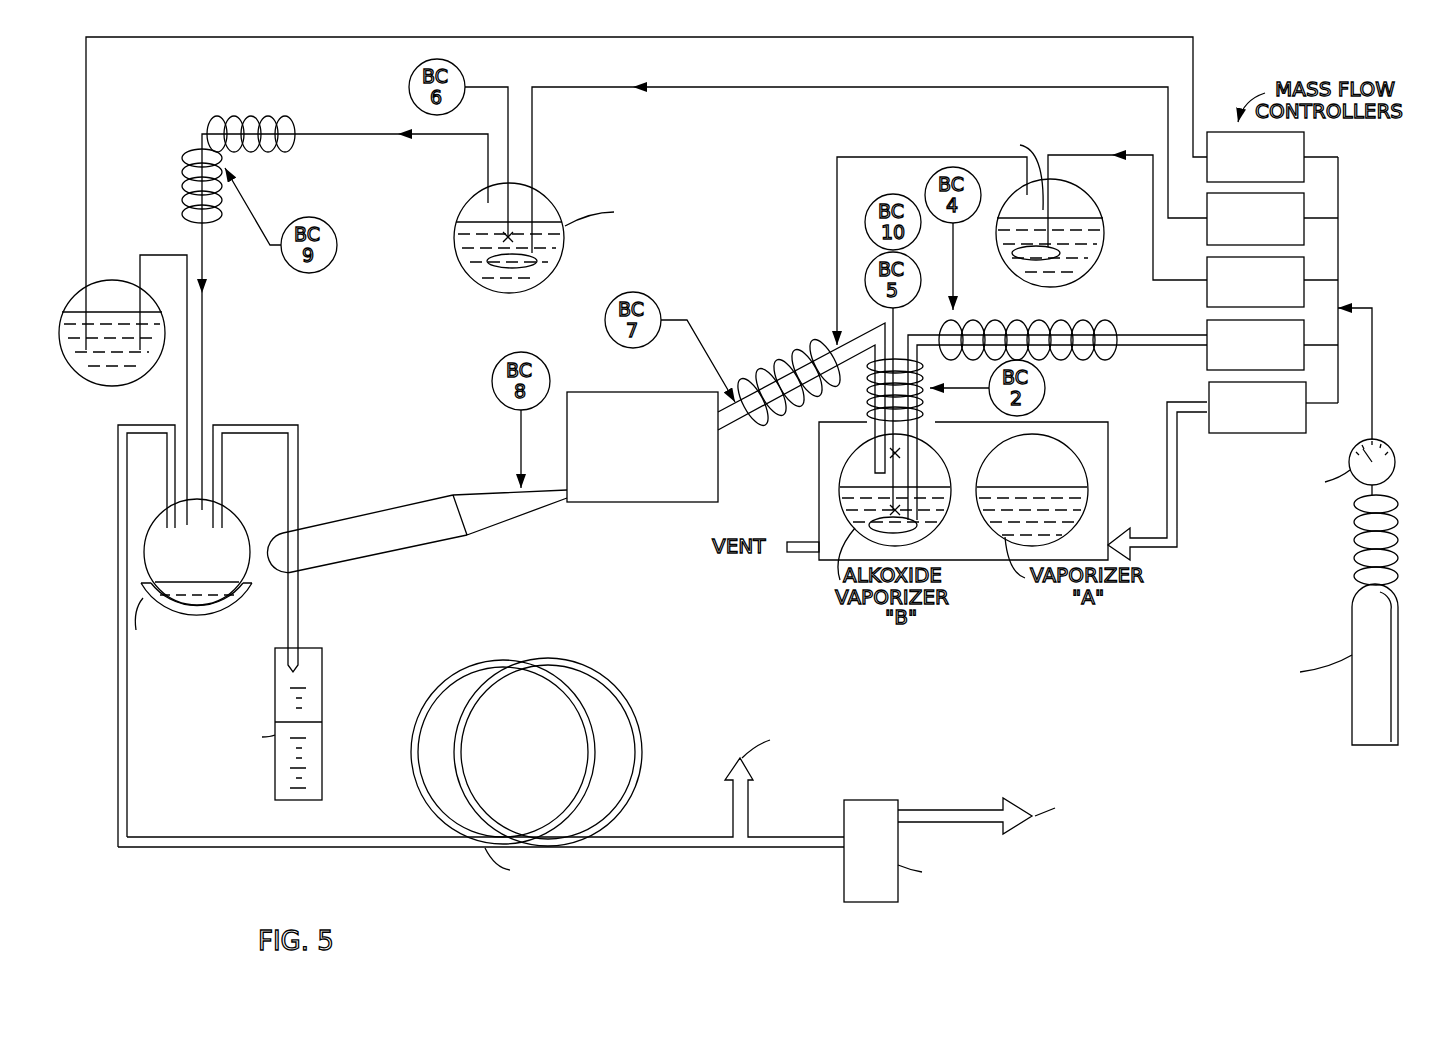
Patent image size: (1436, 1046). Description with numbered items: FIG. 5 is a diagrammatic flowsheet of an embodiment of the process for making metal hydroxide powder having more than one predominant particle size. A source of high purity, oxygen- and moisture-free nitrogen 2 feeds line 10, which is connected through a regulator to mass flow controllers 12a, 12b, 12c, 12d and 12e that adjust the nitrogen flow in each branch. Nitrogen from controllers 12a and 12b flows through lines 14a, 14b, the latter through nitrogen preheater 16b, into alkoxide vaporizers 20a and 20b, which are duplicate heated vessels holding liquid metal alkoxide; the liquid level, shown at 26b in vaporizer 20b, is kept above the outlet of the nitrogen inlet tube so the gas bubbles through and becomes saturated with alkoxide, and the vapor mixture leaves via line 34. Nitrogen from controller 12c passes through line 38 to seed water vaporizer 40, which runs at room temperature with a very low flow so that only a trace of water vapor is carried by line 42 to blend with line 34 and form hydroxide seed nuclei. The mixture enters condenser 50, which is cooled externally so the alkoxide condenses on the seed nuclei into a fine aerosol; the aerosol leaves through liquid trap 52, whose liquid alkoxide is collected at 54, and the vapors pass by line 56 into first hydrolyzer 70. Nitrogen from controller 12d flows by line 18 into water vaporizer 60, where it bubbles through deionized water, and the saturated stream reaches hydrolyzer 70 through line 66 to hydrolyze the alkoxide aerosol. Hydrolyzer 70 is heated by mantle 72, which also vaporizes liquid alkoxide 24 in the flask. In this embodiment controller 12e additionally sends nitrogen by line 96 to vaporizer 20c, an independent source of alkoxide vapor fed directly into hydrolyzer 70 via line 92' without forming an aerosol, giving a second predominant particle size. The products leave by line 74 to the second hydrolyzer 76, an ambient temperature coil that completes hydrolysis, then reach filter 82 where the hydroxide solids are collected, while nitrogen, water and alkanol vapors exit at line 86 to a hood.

The source of high purity non-reactive gas 2 is at (1352, 705).
The line 10 is at (1372, 405).
The mass flow controller 12a is at (1273, 407).
The mass flow controller 12b is at (1272, 345).
The mass flow controller 12c is at (1272, 282).
The mass flow controller 12d is at (1272, 219).
The nitrogen controller 12e is at (1272, 157).
The line 14a is at (1180, 535).
The line 14b is at (1197, 345).
The nitrogen preheater 16b is at (1040, 318).
The line 18 is at (1035, 87).
The vaporizer 20a is at (1085, 492).
The vaporizer 20b is at (845, 500).
The vaporizer 20c is at (90, 280).
The liquid alkoxide 24 is at (165, 585).
The level of metal alkoxide liquid 26b is at (905, 530).
The line 34 is at (833, 347).
The line 38 is at (1153, 270).
The seed water vaporizer 40 is at (1092, 197).
The line 42 is at (870, 157).
The condenser 50 is at (665, 502).
The liquid trap 52 is at (365, 555).
The liquid collector 54 is at (323, 705).
The line 56 is at (245, 425).
The water vaporizer 60 is at (540, 192).
The line 66 is at (318, 134).
The first hydrolyzer 70 is at (240, 513).
The heating mantle 72 is at (152, 590).
The line 74 is at (130, 812).
The second hydrolyzer 76 is at (632, 712).
The filter 82 is at (873, 902).
The line 86 is at (930, 810).
The line 92' is at (162, 390).
The line 96 is at (248, 37).